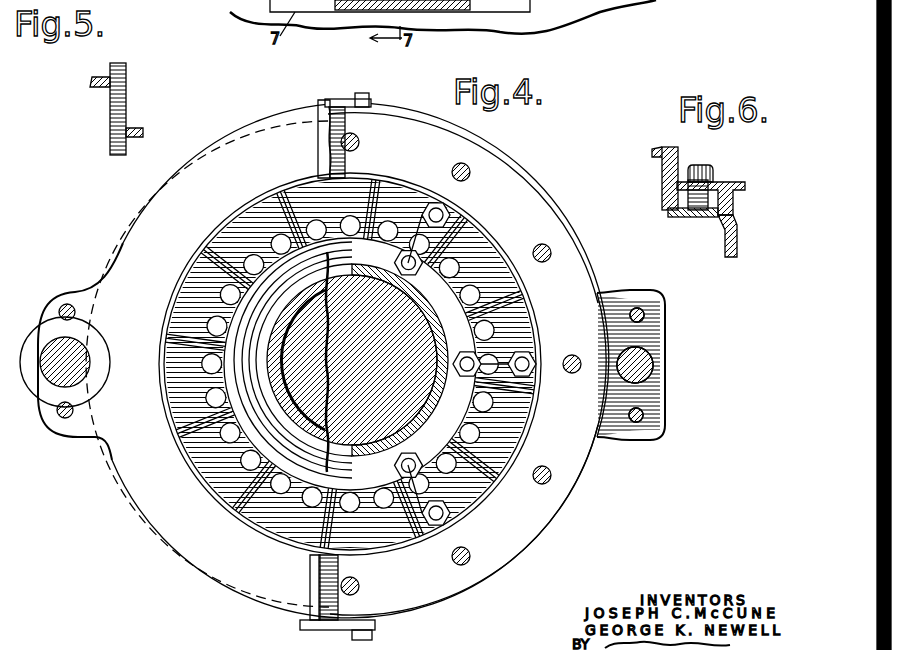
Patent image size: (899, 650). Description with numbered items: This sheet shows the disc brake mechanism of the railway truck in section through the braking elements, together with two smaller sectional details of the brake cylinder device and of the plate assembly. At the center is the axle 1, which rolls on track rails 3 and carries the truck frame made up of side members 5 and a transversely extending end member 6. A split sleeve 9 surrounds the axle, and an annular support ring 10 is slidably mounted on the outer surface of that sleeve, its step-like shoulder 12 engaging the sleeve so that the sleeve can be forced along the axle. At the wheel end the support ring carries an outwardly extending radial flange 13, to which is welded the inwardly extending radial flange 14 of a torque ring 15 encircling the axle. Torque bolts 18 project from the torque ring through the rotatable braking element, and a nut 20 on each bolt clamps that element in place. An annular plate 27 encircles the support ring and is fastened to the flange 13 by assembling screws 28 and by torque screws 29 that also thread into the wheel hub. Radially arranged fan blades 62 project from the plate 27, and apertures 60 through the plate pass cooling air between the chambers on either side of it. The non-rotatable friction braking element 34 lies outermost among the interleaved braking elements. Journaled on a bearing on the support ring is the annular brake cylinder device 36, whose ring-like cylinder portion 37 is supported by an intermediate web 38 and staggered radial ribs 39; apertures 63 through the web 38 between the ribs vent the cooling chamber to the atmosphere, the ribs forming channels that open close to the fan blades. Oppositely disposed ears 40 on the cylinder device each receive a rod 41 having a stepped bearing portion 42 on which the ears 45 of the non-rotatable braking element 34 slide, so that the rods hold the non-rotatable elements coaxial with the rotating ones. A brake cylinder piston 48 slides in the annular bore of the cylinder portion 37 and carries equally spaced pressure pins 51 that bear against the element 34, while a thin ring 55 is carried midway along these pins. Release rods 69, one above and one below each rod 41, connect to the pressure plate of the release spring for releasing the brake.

In FIG. 4, the axle 1 is at (190, 431).
In FIG. 5, the track rails 3 is at (127, 110).
In FIG. 4, the side members 5 is at (206, 326).
In FIG. 4, the end member 6 is at (506, 419).
In FIG. 4, the split sleeve 9 is at (352, 319).
In FIG. 4, the annular support ring 10 is at (367, 343).
In FIG. 6, the annular support ring 10 is at (662, 182).
In FIG. 6, the step-like shoulder 12 is at (652, 153).
In FIG. 6, the radial flange 13 is at (674, 217).
In FIG. 6, the radial flange 14 is at (697, 217).
In FIG. 6, the torque ring 15 is at (735, 238).
In FIG. 4, the torque bolt 18 is at (450, 212).
In FIG. 4, the nut 20 is at (498, 367).
In FIG. 4, the annular plate 27 is at (522, 214).
In FIG. 6, the annular plate 27 is at (737, 184).
In FIG. 4, the assembling screws 28 is at (362, 93).
In FIG. 6, the assembling screws 28 is at (706, 170).
In FIG. 4, the torque screws 29 is at (340, 290).
In FIG. 4, the non-rotatable friction braking element 34 is at (518, 154).
In FIG. 4, the brake cylinder device 36 is at (126, 486).
In FIG. 4, the cylinder portion 37 is at (187, 553).
In FIG. 4, the web 38 is at (233, 462).
In FIG. 5, the web 38 is at (126, 83).
In FIG. 4, the radial ribs 39 is at (240, 300).
In FIG. 5, the radial ribs 39 is at (92, 81).
In FIG. 4, the ears 40 is at (71, 355).
In FIG. 4, the rod 41 is at (72, 334).
In FIG. 4, the bearing portion 42 is at (660, 395).
In FIG. 4, the ears 45 is at (662, 332).
In FIG. 4, the brake cylinder piston 48 is at (192, 580).
In FIG. 4, the pressure pins 51 is at (348, 132).
In FIG. 4, the ring 55 is at (488, 162).
In FIG. 4, the apertures 60 is at (388, 222).
In FIG. 4, the fan blades 62 is at (412, 250).
In FIG. 4, the apertures 63 is at (280, 250).
In FIG. 4, the release rods 69 is at (62, 306).